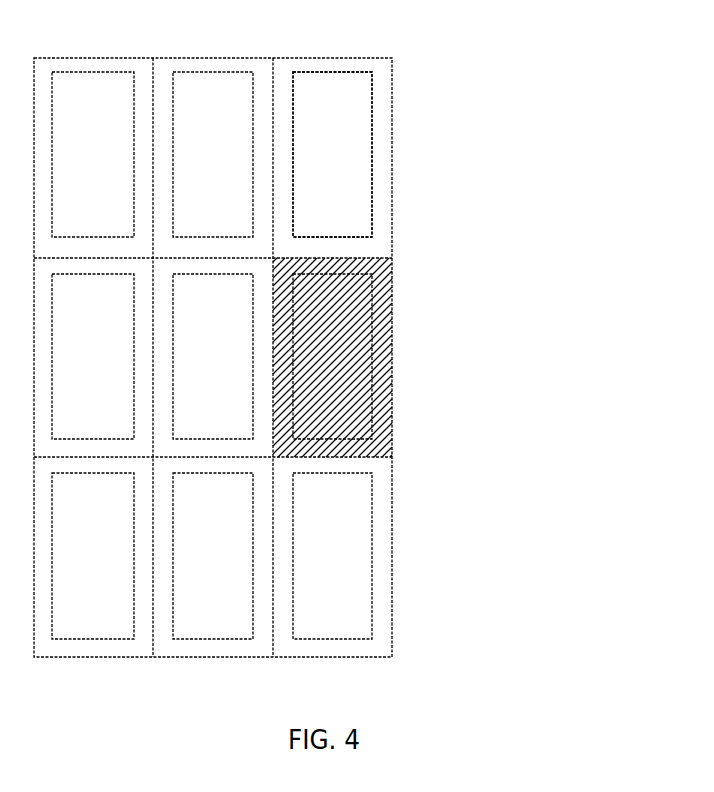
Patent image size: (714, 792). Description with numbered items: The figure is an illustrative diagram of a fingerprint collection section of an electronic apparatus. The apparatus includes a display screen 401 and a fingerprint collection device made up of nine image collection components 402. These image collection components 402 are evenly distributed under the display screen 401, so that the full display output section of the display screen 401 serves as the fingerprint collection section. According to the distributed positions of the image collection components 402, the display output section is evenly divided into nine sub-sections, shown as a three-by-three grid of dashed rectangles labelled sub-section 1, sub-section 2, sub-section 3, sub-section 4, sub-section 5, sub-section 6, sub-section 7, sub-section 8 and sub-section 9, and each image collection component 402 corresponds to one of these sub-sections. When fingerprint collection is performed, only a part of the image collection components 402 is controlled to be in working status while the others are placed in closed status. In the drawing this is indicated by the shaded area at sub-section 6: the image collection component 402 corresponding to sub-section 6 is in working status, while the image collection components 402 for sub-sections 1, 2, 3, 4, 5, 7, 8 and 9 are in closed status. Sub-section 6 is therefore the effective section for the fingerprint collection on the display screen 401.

The display screen 401 is at (320, 357).
The image collection component 402 is at (450, 149).
The sub-section 1 is at (93, 154).
The sub-section 2 is at (213, 154).
The sub-section 3 is at (332, 154).
The sub-section 4 is at (93, 356).
The sub-section 5 is at (213, 356).
The sub-section 6 is at (332, 357).
The sub-section 7 is at (93, 556).
The sub-section 8 is at (213, 556).
The sub-section 9 is at (332, 556).